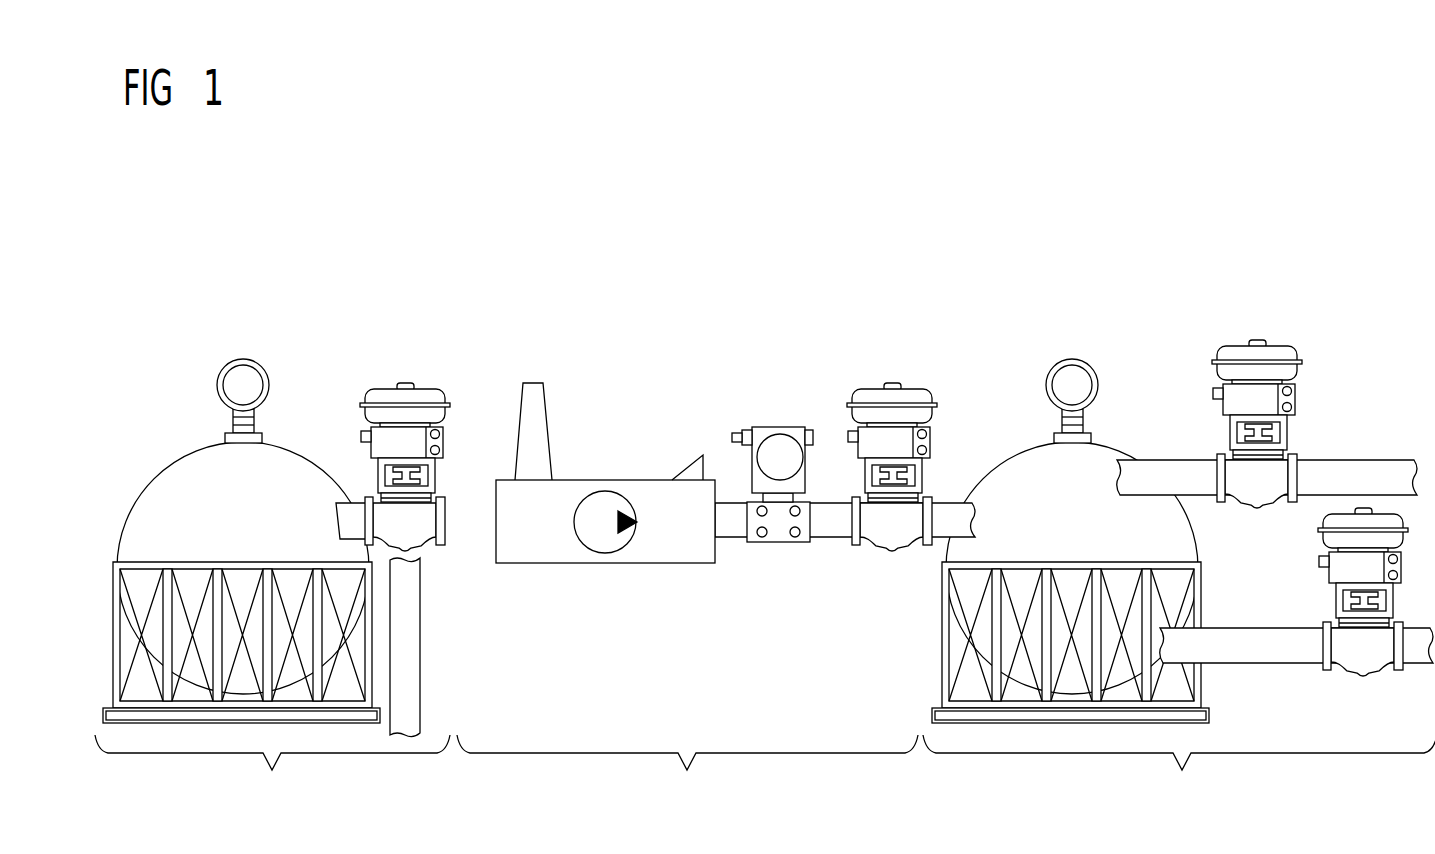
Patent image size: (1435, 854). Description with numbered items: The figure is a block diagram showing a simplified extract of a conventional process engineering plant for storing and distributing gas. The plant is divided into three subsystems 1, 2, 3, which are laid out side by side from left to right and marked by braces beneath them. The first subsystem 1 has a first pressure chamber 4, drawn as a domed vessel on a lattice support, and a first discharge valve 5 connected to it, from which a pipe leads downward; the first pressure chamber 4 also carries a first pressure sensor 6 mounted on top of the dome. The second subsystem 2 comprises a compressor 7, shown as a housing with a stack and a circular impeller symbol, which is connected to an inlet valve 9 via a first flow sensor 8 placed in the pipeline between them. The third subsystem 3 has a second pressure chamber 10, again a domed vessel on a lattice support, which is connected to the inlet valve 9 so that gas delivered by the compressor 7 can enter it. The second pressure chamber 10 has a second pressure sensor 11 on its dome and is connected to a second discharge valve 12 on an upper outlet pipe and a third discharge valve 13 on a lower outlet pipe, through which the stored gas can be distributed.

The first subsystem 1 is at (272, 770).
The second subsystem 2 is at (716, 654).
The third subsystem 3 is at (1179, 770).
The first pressure chamber 4 is at (195, 475).
The first discharge valve 5 is at (420, 532).
The first pressure sensor 6 is at (243, 378).
The compressor 7 is at (653, 495).
The first flow sensor 8 is at (778, 533).
The inlet valve 9 is at (888, 533).
The second pressure chamber 10 is at (1023, 475).
The second pressure sensor 11 is at (1073, 378).
The second discharge valve 12 is at (1257, 490).
The third discharge valve 13 is at (1362, 658).